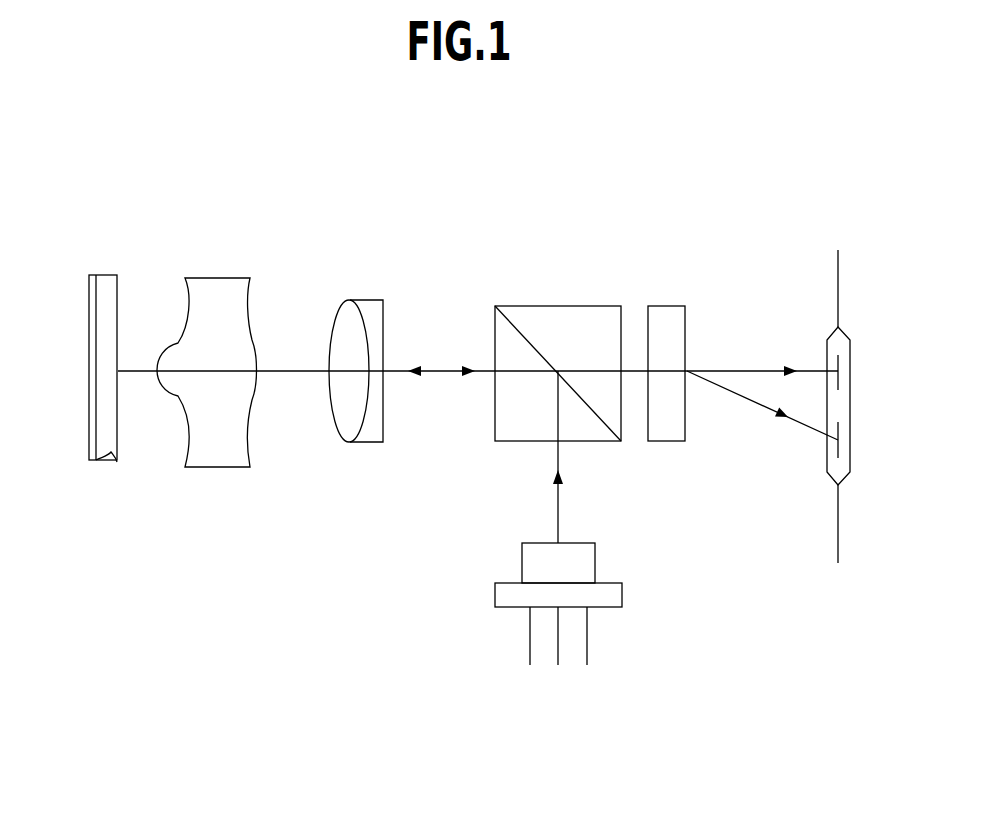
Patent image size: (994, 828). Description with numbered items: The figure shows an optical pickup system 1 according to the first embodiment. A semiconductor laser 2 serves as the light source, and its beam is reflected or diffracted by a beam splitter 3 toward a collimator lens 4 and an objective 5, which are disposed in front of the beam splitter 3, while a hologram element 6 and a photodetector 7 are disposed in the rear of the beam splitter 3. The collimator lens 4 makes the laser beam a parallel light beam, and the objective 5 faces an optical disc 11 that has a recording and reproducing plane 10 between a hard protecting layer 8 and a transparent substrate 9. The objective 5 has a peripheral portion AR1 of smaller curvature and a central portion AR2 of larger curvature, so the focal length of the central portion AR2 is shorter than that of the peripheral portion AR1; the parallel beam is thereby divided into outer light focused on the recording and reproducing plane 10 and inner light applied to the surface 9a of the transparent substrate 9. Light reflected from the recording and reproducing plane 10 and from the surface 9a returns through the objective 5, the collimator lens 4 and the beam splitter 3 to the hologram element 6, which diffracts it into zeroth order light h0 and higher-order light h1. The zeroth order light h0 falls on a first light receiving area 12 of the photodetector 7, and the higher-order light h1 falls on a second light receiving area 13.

The optical pickup system 1 is at (472, 278).
The semiconductor laser 2 is at (577, 549).
The beam splitter 3 is at (565, 306).
The collimator lens 4 is at (366, 300).
The objective 5 is at (222, 278).
The hologram element 6 is at (664, 306).
The photodetector 7 is at (843, 333).
The hard protecting layer 8 is at (88, 283).
The transparent substrate 9 is at (117, 282).
The surface of the transparent substrate 9a is at (118, 435).
The recording and reproducing plane 10 is at (99, 280).
The optical disc 11 is at (158, 205).
The first light receiving area 12 is at (837, 358).
The second light receiving area 13 is at (837, 450).
The zeroth order light h0 is at (739, 370).
The higher-order light h1 is at (748, 403).
The peripheral portion AR1 is at (183, 422).
The central portion AR2 is at (167, 352).